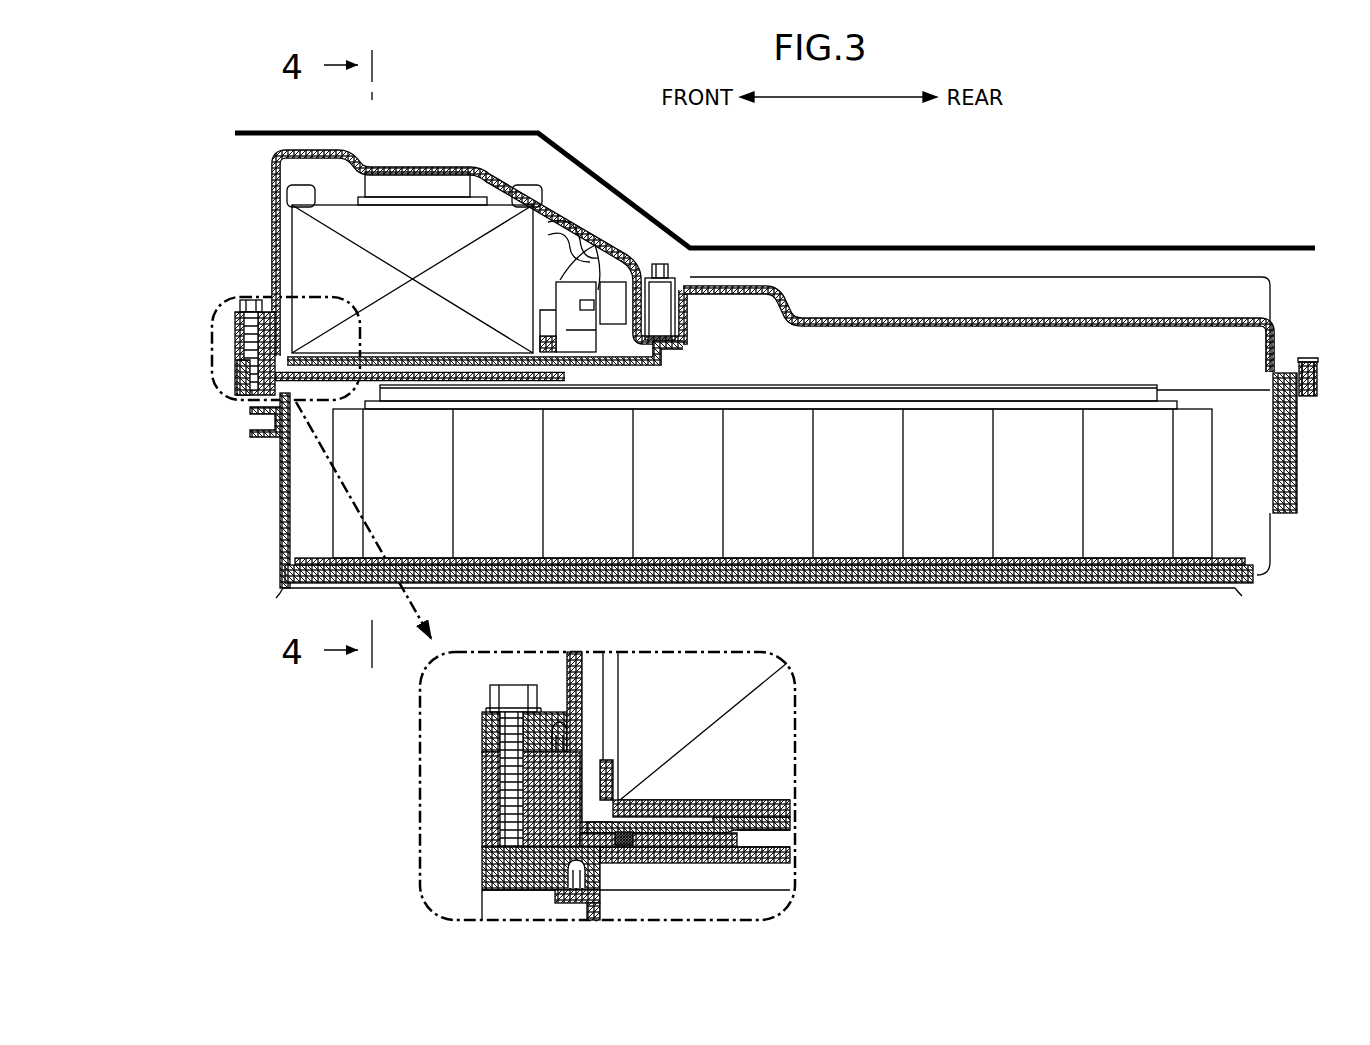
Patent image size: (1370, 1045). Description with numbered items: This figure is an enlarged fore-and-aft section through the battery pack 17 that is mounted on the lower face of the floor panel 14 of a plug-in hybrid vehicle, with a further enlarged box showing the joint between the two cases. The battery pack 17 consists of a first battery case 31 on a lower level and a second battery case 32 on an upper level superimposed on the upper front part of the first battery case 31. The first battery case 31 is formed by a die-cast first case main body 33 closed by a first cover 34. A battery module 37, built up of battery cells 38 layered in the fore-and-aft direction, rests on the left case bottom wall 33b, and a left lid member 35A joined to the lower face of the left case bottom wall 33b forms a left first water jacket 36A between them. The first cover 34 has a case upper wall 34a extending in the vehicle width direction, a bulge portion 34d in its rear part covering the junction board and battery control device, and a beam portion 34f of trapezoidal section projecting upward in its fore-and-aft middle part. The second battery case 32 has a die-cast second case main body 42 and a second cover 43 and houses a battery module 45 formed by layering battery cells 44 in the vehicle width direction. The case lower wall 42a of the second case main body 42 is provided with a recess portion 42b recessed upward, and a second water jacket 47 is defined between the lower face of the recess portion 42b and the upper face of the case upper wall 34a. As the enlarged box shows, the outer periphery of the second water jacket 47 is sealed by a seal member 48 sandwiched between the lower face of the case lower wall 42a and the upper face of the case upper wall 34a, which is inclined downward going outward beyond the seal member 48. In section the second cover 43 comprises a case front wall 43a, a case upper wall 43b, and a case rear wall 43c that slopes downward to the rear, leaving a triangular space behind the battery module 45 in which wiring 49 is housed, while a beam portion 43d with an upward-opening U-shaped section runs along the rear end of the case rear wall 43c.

The floor panel 14 is at (632, 207).
The battery pack 17 is at (266, 187).
The first battery case 31 is at (165, 437).
The second battery case 32 is at (165, 270).
The first case main body 33 is at (278, 527).
The left case bottom wall 33b is at (858, 580).
The first cover 34 is at (226, 395).
The case upper wall 34a is at (462, 388).
The bulge portion 34d is at (1010, 277).
The beam portion 34f is at (757, 293).
The left lid member 35A is at (820, 588).
The left first water jacket 36A is at (940, 578).
The battery module 37 is at (1085, 380).
The battery cell 38 is at (690, 530).
The second case main body 42 is at (236, 364).
The case lower wall 42a is at (520, 355).
The recess portion 42b is at (395, 372).
The second cover 43 is at (234, 323).
The case front wall 43a is at (272, 258).
The case upper wall 43b is at (422, 165).
The case rear wall 43c is at (590, 225).
The beam portion 43d is at (667, 297).
The battery cell 44 is at (401, 246).
The battery module 45 is at (340, 190).
The second water jacket 47 is at (455, 365).
The seal member 48 is at (627, 832).
The wiring 49 is at (612, 262).